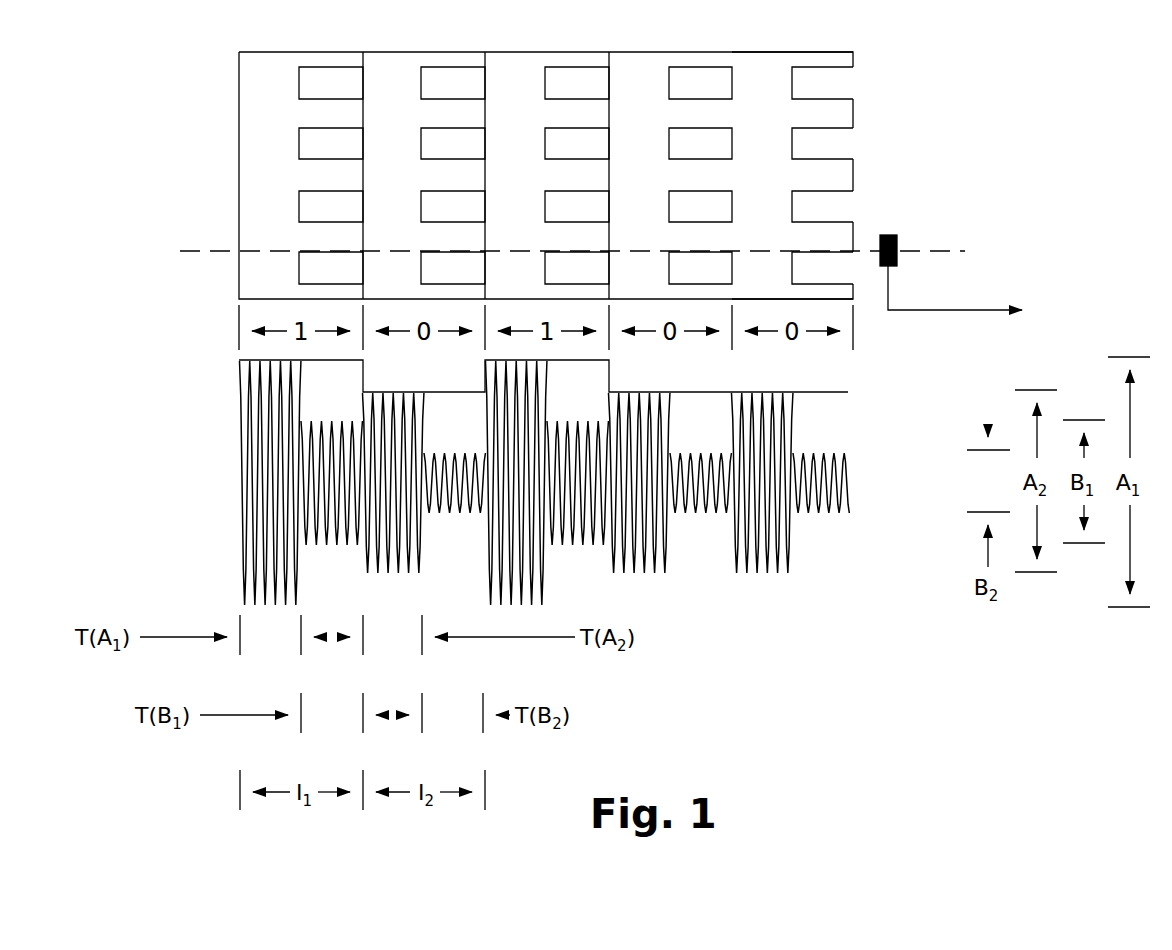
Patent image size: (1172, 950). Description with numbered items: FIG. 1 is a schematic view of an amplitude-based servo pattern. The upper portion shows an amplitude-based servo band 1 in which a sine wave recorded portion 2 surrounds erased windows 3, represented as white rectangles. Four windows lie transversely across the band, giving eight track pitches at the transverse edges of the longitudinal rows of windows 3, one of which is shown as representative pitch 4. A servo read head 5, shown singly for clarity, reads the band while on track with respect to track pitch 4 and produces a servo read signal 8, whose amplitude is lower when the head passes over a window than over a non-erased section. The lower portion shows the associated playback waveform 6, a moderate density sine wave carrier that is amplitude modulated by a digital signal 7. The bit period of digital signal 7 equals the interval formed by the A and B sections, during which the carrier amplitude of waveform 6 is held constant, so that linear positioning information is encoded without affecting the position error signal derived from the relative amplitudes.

The servo band 1 is at (545, 51).
The sine wave recorded portion 2 is at (768, 55).
The erased windows 3 is at (840, 149).
The track pitch 4 is at (946, 250).
The servo read head 5 is at (890, 236).
The playback waveform 6 is at (853, 493).
The digital signal 7 is at (840, 391).
The servo read signal 8 is at (939, 311).